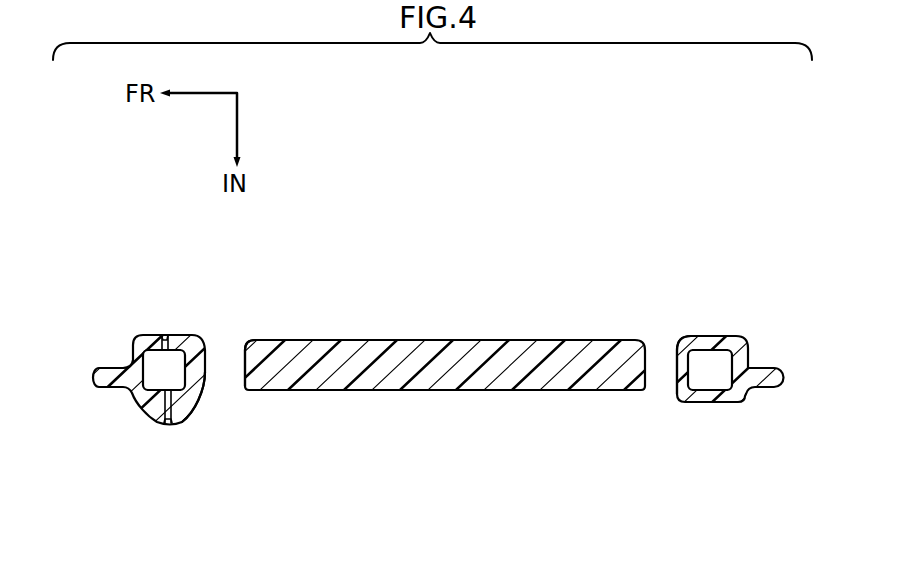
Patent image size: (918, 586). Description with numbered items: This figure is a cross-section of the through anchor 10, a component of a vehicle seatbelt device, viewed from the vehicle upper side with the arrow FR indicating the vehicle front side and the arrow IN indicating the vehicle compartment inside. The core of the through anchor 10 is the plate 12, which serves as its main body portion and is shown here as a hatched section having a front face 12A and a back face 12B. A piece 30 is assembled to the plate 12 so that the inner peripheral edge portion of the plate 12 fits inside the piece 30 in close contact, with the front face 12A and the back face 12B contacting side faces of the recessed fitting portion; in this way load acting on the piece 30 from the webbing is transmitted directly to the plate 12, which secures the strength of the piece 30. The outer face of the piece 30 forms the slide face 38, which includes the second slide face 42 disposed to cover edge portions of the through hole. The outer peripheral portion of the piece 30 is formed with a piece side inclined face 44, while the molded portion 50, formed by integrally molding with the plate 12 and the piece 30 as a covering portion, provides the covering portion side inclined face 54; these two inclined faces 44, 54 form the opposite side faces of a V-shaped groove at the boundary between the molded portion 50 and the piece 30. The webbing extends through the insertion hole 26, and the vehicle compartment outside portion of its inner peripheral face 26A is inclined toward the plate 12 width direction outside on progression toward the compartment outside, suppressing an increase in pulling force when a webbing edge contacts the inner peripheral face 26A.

The through anchor 10 is at (568, 214).
The plate 12 is at (144, 396).
The front face 12A is at (181, 425).
The back face 12B is at (177, 350).
The insertion hole 26 is at (245, 374).
The inner peripheral face 26A is at (676, 373).
The piece 30 is at (200, 414).
The slide face 38 is at (259, 412).
The second slide face 42 is at (204, 390).
The piece side inclined face 44 is at (166, 335).
The molded portion 50 is at (95, 390).
The covering portion side inclined face 54 is at (163, 335).